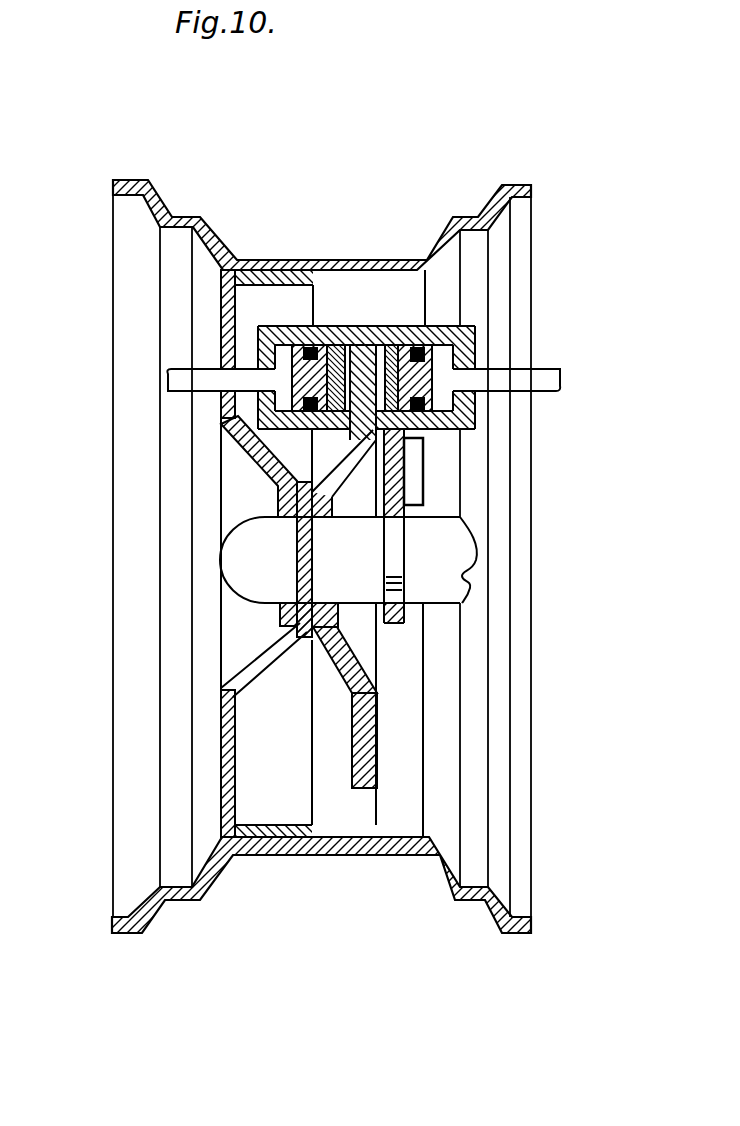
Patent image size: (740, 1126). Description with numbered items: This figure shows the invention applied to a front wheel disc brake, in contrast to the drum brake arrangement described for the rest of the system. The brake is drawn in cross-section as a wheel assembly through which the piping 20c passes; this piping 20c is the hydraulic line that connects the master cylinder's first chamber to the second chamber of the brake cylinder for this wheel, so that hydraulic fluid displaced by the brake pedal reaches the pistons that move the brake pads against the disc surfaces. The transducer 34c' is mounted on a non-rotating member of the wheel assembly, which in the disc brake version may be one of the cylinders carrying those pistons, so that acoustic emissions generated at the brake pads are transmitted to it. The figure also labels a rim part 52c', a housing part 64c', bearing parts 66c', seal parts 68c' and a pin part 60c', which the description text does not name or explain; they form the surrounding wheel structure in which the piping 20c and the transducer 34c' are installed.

The wheel rim 52c' is at (369, 556).
The bearing housing 64c' is at (366, 322).
The piping 20c is at (168, 368).
The bearings 66c' is at (330, 356).
The seals 68c' is at (323, 399).
The transducer 34c' is at (506, 471).
The pin 60c' is at (310, 714).